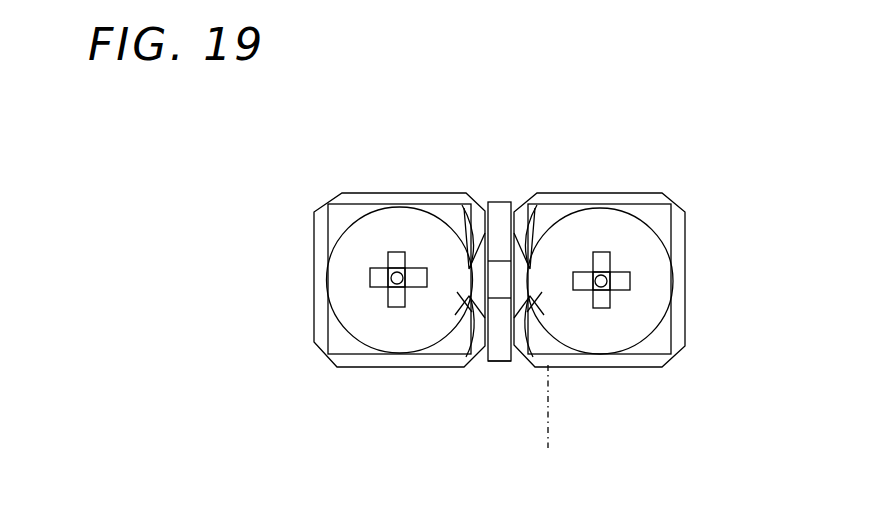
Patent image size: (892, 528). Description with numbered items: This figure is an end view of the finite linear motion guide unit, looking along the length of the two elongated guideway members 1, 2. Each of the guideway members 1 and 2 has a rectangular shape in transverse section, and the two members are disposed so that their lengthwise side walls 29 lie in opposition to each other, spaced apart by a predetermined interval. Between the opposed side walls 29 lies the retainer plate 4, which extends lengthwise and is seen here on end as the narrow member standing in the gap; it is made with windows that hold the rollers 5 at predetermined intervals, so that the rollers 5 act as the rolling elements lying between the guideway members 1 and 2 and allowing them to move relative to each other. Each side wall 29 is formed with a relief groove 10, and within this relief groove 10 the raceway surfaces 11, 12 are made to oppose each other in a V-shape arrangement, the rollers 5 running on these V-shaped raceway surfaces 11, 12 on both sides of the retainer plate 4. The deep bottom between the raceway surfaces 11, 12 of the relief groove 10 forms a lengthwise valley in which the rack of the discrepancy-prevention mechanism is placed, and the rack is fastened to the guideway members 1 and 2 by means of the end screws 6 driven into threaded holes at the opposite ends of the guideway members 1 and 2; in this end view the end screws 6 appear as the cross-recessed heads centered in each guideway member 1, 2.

The guideway member 1 is at (352, 209).
The guideway member 2 is at (675, 213).
The retainer plate 4 is at (498, 222).
The roller 5 is at (462, 303).
The end screw 6 is at (347, 292).
The relief groove 10 is at (530, 267).
The raceway surface 11 is at (468, 267).
The raceway surface 12 is at (548, 426).
The side wall 29 is at (490, 362).